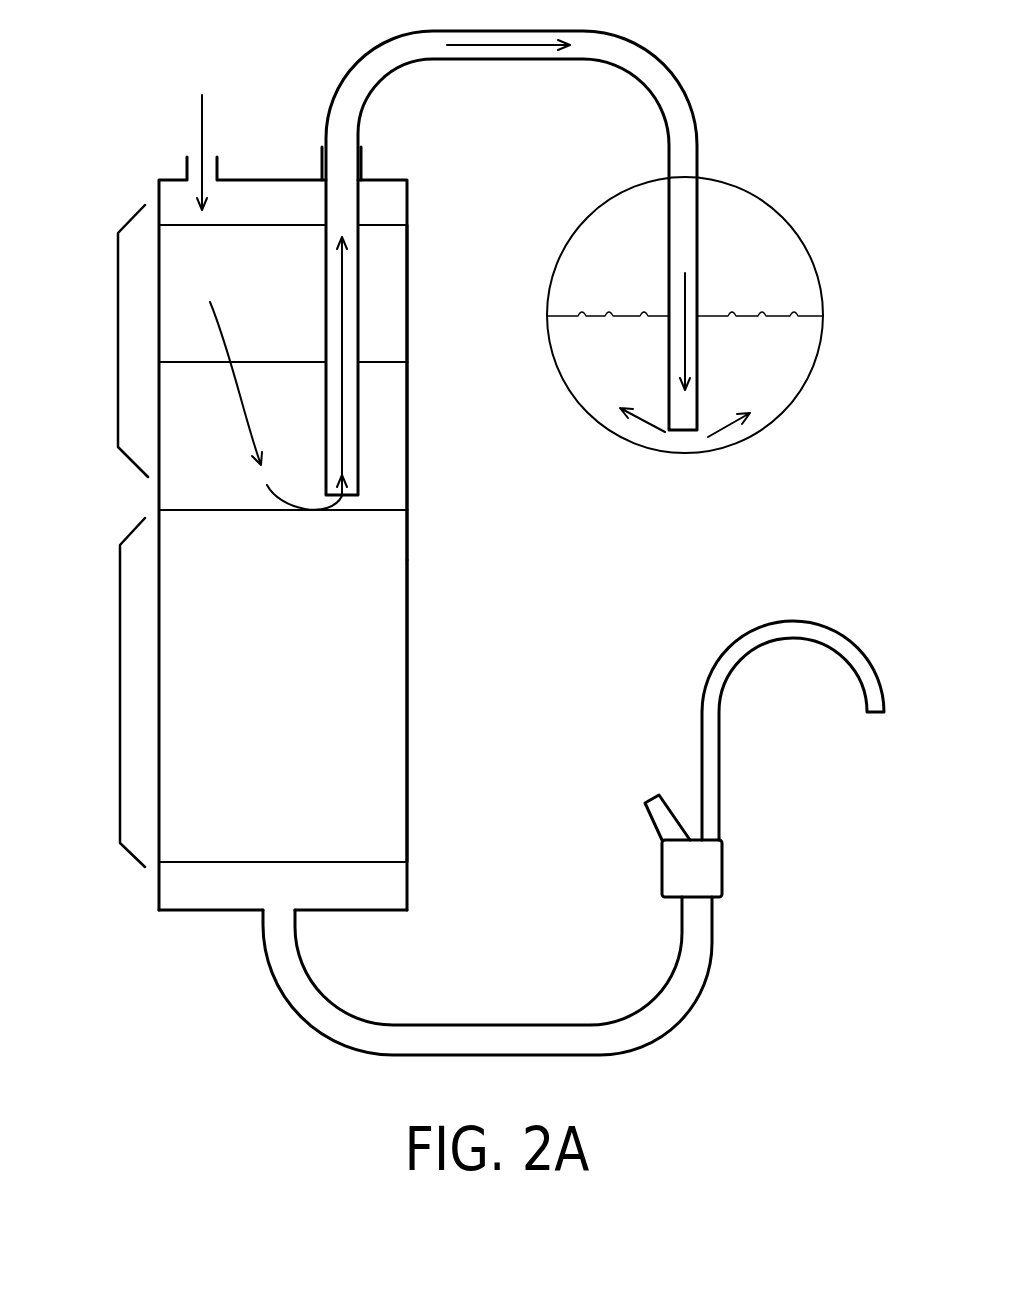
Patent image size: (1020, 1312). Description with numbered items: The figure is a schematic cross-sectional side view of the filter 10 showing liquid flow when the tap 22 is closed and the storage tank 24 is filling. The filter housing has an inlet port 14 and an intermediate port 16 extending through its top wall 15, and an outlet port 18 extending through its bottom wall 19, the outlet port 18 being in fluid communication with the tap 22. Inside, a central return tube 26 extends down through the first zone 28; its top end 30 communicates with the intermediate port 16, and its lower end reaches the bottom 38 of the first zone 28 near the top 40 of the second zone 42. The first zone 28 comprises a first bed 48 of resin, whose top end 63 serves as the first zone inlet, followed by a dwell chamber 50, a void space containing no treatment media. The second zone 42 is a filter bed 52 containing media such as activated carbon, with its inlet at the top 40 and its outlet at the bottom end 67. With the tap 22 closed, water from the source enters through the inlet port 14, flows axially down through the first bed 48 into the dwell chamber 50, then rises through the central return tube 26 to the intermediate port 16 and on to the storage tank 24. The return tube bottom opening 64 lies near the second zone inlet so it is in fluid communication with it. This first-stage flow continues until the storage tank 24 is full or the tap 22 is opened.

The filter 10 is at (125, 489).
The inlet port 14 is at (185, 160).
The top wall 15 is at (165, 182).
The intermediate port 16 is at (320, 157).
The outlet port 18 is at (300, 922).
The bottom wall 19 is at (195, 912).
The tap 22 is at (741, 917).
The storage tank 24 is at (765, 165).
The central return tube 26 is at (368, 322).
The first zone 28 is at (111, 341).
The top end 30 is at (368, 186).
The bottom 38 is at (402, 508).
The top 40 is at (403, 530).
The second zone 42 is at (112, 692).
The first bed 48 is at (386, 281).
The dwell chamber 50 is at (388, 414).
The filter bed 52 is at (397, 622).
The top end 63 is at (393, 250).
The bottom opening 64 is at (375, 495).
The bottom end 67 is at (402, 840).